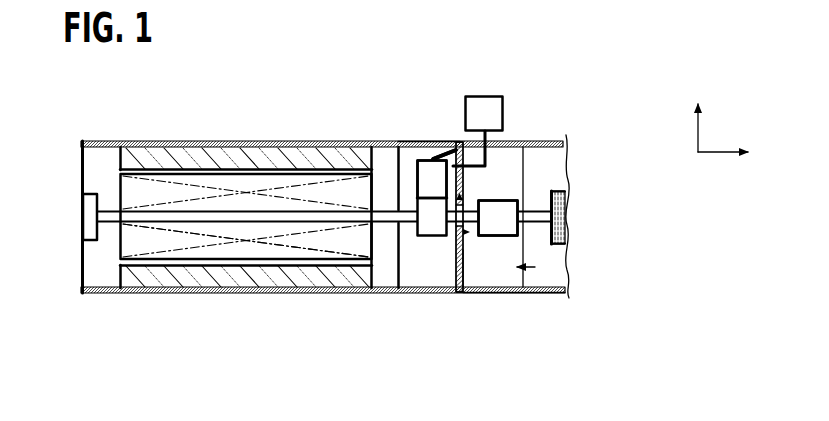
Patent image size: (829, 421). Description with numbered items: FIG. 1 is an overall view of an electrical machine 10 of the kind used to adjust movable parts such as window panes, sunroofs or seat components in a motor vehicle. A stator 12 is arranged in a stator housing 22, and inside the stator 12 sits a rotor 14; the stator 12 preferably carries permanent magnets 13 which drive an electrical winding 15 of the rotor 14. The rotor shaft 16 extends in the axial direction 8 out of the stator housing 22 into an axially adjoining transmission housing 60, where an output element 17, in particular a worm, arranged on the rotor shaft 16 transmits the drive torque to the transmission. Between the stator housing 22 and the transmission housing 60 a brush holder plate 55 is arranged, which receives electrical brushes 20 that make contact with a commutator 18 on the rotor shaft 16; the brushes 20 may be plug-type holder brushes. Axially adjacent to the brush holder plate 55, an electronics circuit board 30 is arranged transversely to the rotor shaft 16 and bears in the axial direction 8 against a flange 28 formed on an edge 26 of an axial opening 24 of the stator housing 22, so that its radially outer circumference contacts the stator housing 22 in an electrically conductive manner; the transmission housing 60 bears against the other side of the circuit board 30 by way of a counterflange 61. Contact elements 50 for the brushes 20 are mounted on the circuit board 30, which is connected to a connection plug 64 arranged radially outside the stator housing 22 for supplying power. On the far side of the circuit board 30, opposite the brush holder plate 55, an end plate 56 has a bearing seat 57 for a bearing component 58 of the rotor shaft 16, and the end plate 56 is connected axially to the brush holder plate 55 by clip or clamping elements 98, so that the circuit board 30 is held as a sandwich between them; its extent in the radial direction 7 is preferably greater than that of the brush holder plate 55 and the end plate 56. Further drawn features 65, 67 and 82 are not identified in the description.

The electrical machine 10 is at (108, 138).
The stator 12 is at (253, 155).
The permanent magnets 13 is at (162, 155).
The rotor 14 is at (296, 255).
The electrical winding 15 is at (248, 247).
The rotor shaft 16 is at (305, 216).
The commutator 18 is at (423, 234).
The electrical brushes 20 is at (413, 144).
The stator housing 22 is at (203, 148).
The axial opening 24 is at (425, 159).
The edge 26 is at (450, 260).
The flange 28 is at (458, 292).
The electronics circuit board 30 is at (470, 263).
The contact elements 50 is at (433, 157).
The brush holder plate 55 is at (406, 292).
The end plate 56 is at (535, 267).
The bearing seat 57 is at (508, 208).
The bearing component 58 is at (557, 190).
The transmission housing 60 is at (557, 293).
The counterflange 61 is at (468, 293).
The connection plug 64 is at (481, 105).
The guide wall 65 is at (500, 152).
The coupling 67 is at (453, 150).
The valve seat 82 is at (499, 193).
The output element 17 is at (567, 210).
The clamping elements 98 is at (566, 243).
The radial direction 7 is at (698, 133).
The axial direction 8 is at (712, 157).